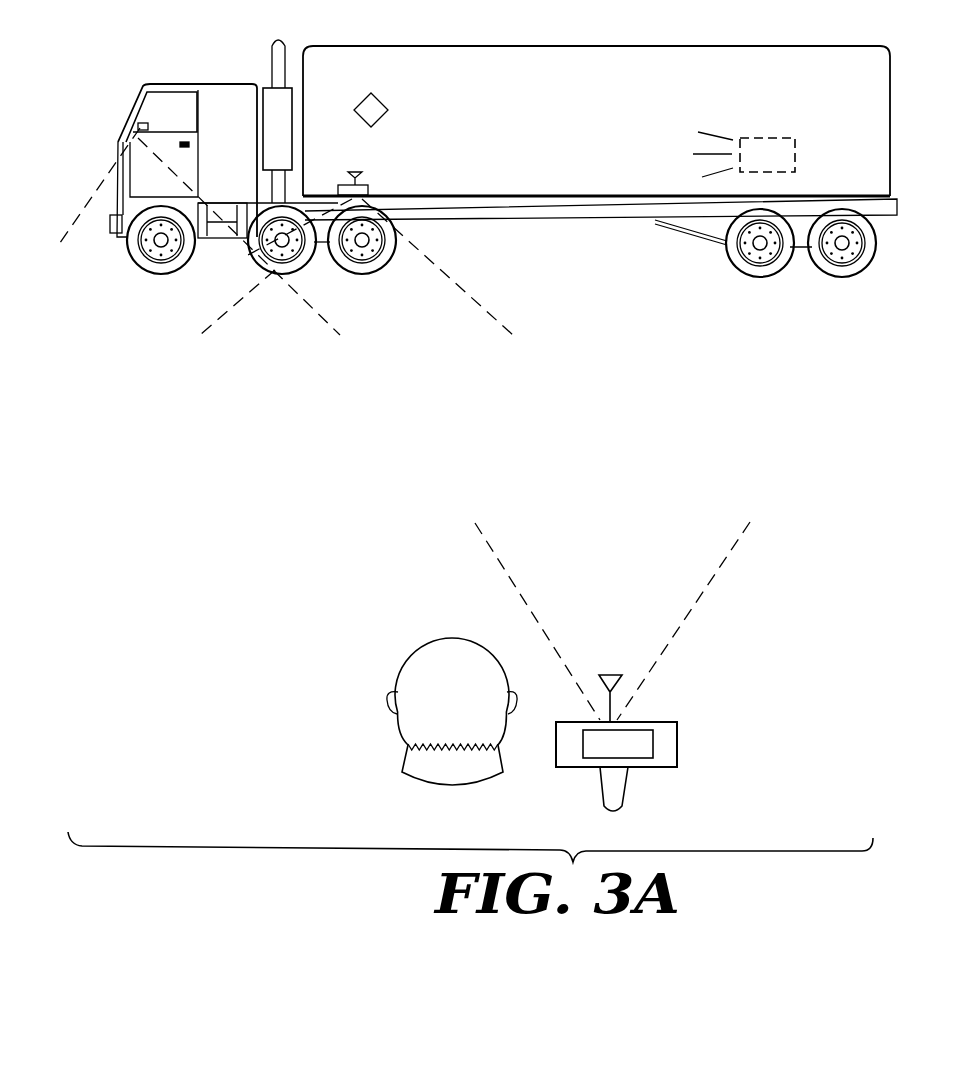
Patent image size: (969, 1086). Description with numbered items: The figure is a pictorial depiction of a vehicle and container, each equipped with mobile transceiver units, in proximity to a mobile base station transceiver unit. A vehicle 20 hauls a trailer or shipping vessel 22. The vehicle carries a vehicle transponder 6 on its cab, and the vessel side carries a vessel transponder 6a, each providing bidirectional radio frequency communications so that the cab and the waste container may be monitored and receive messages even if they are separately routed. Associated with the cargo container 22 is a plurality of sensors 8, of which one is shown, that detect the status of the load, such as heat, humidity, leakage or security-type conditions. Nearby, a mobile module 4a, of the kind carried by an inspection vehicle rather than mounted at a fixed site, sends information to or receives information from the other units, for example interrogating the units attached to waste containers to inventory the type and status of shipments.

The mobile module 4a is at (660, 722).
The vehicle transponder 6 is at (139, 106).
The vessel transponder 6a is at (355, 167).
The sensor 8 is at (773, 143).
The vehicle 20 is at (238, 173).
The trailer or shipping vessel 22 is at (570, 141).